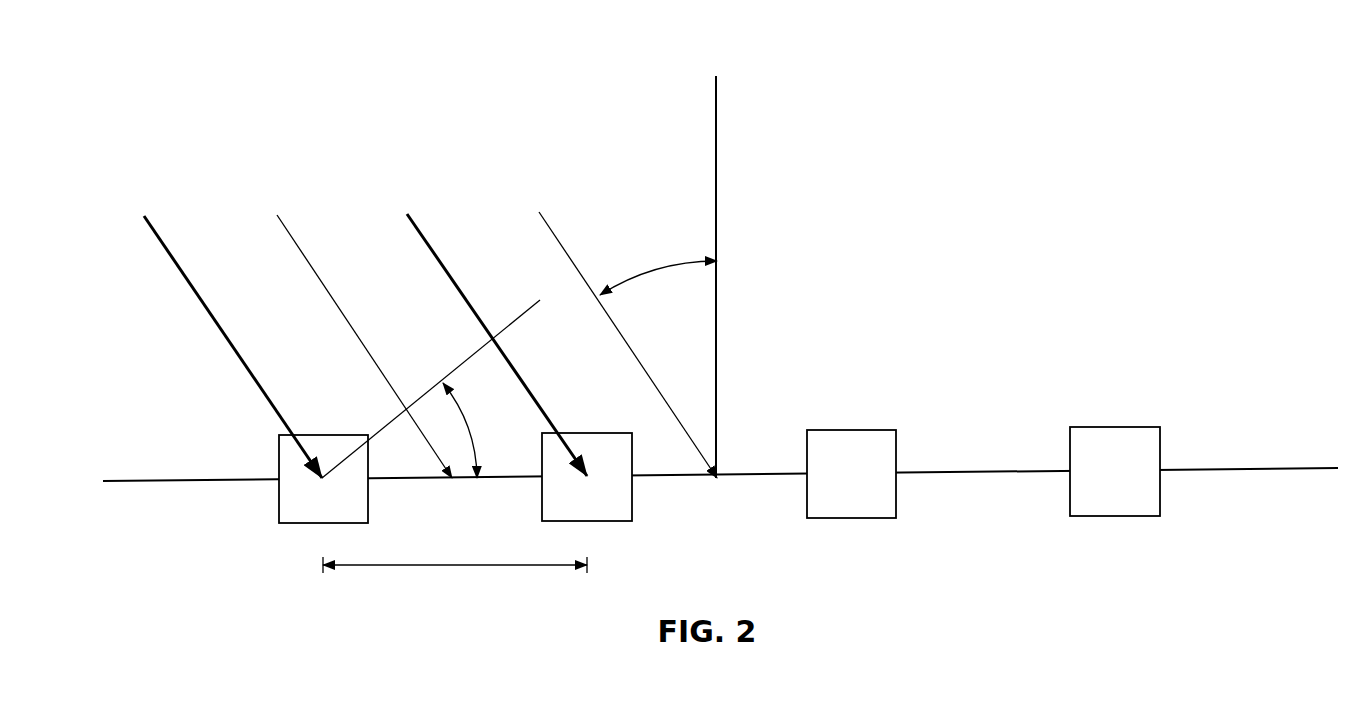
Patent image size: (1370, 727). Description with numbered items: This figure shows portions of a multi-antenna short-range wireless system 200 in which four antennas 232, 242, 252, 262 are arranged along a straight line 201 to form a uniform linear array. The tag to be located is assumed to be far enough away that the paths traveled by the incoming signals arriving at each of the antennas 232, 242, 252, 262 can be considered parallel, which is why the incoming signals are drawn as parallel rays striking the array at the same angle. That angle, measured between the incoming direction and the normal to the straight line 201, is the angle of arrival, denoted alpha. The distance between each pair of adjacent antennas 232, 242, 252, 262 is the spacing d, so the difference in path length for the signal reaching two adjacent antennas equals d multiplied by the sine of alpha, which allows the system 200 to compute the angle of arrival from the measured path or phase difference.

The multi-antenna short-range wireless system 200 is at (191, 90).
The straight line 201 is at (1298, 470).
The antenna 232 is at (322, 524).
The antenna 242 is at (585, 522).
The antenna 252 is at (853, 519).
The antenna 262 is at (1115, 517).